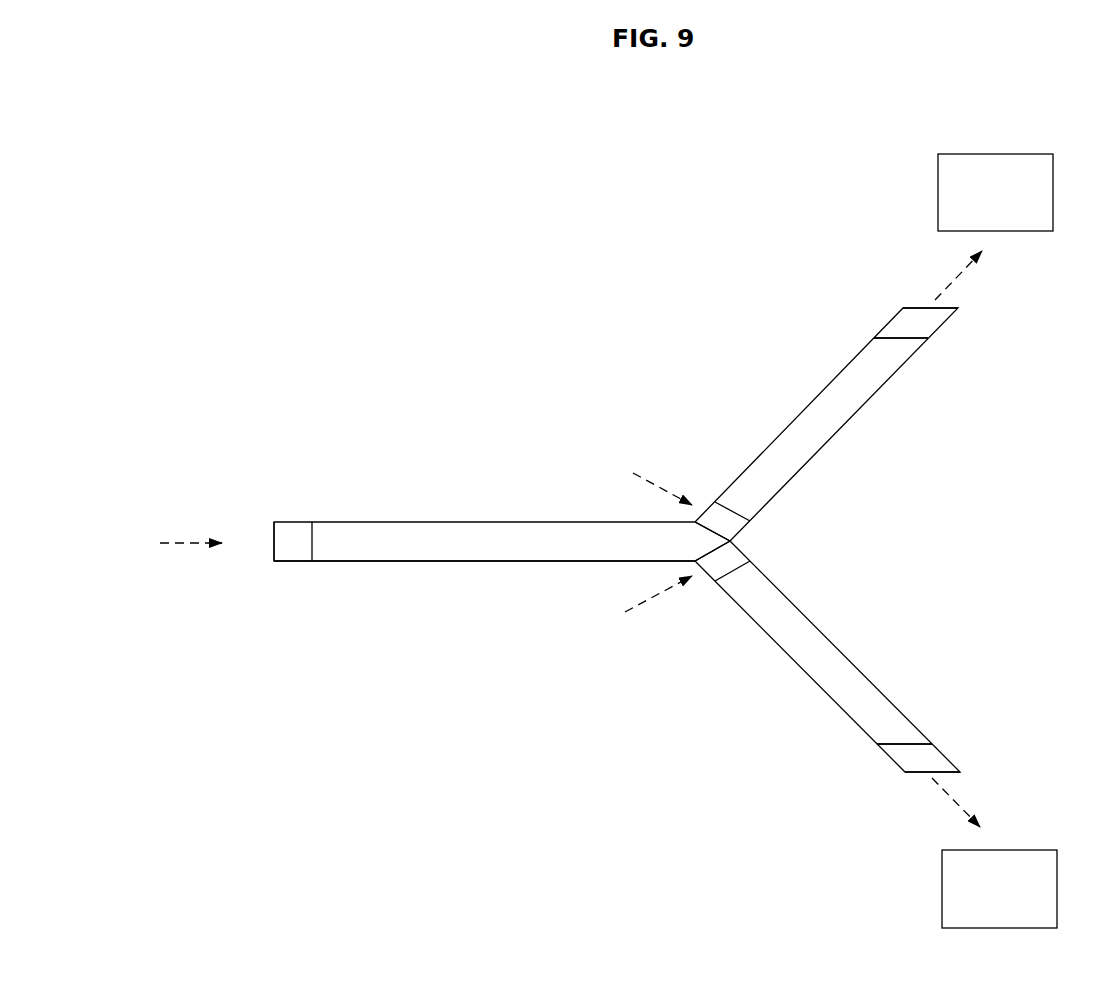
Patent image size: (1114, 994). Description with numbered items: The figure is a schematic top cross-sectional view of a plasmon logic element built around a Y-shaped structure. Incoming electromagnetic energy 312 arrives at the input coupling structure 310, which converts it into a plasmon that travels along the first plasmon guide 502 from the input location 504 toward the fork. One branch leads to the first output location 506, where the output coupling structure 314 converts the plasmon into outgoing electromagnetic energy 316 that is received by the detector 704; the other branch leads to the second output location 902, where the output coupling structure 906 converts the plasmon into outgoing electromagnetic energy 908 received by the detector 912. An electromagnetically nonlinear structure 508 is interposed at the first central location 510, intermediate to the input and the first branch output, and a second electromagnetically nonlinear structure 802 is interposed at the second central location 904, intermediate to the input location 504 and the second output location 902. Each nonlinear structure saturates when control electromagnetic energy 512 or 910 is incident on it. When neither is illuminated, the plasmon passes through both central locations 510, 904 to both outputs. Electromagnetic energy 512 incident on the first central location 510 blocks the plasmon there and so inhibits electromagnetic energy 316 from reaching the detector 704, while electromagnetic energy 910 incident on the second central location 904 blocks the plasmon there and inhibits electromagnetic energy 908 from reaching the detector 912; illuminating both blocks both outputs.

The input coupling structure 310 is at (293, 562).
The incoming electromagnetic energy 312 is at (191, 524).
The output coupling structure 314 is at (943, 325).
The outgoing electromagnetic energy 316 is at (942, 275).
The first plasmon guide 502 is at (505, 522).
The input location 504 is at (447, 562).
The first output location 506 is at (855, 362).
The electromagnetically nonlinear structure 508 is at (825, 507).
The first central location 510 is at (740, 503).
The electromagnetic energy 512 is at (636, 478).
The detector 704 is at (995, 192).
The second electromagnetically nonlinear structure 802 is at (825, 580).
The second output location 902 is at (822, 688).
The second central location 904 is at (741, 585).
The output coupling structure 906 is at (943, 753).
The outgoing electromagnetic energy 908 is at (938, 802).
The electromagnetic energy 910 is at (633, 608).
The detector 912 is at (999, 889).